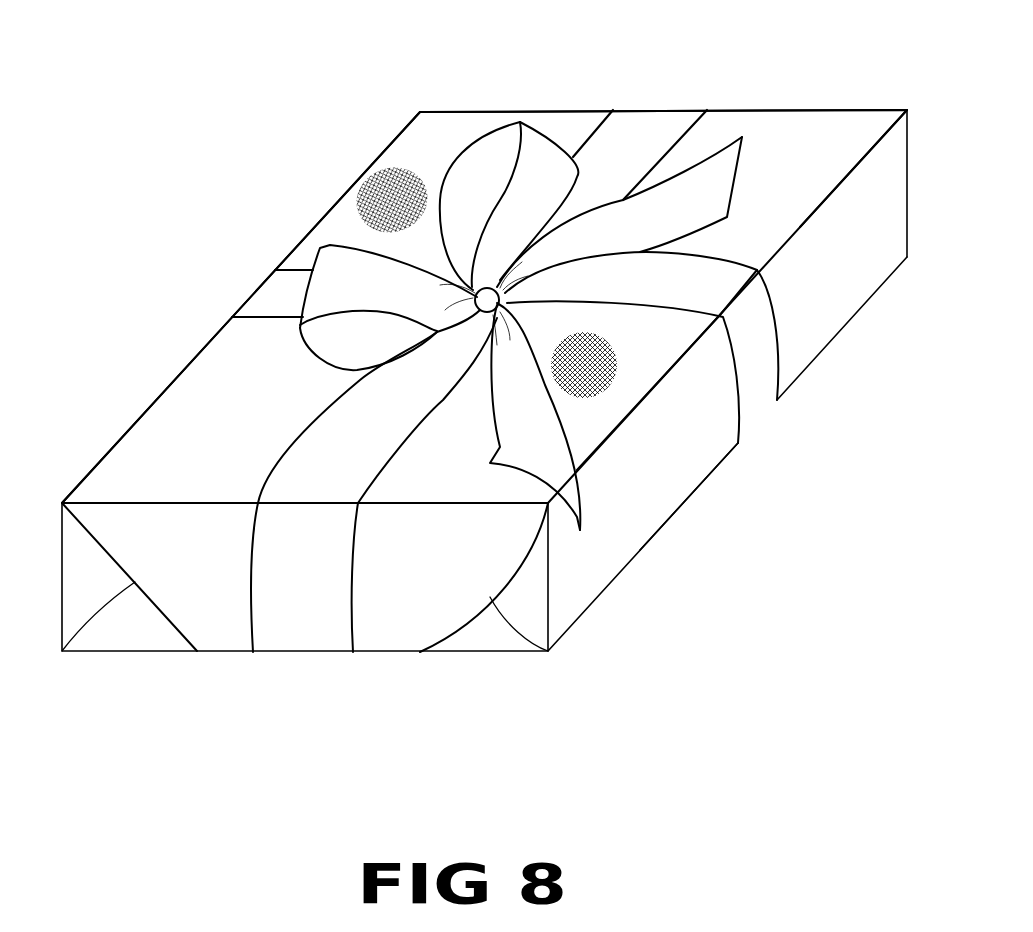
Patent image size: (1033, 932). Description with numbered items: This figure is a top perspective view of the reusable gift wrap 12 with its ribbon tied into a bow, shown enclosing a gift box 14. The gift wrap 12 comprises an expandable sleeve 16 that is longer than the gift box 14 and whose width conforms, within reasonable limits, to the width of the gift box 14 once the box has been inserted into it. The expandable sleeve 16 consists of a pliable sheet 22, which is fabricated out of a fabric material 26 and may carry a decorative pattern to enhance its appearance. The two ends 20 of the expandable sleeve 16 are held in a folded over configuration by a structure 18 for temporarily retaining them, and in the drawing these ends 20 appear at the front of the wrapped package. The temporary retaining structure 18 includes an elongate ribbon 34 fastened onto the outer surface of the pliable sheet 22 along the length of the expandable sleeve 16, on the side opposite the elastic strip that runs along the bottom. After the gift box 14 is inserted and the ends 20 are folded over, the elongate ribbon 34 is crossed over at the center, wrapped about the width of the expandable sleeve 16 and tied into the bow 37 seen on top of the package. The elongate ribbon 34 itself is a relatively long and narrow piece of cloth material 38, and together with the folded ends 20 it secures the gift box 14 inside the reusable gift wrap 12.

The reusable gift wrap 12 is at (126, 238).
The gift box 14 is at (145, 440).
The expandable sleeve 16 is at (830, 347).
The structure for temporarily retaining 18 is at (762, 422).
The ends 20 is at (405, 643).
The pliable sheet 22 is at (830, 120).
The fabric material 26 is at (580, 112).
The elongate ribbon 34 is at (300, 642).
The bow 37 is at (483, 137).
The cloth material 38 is at (657, 112).